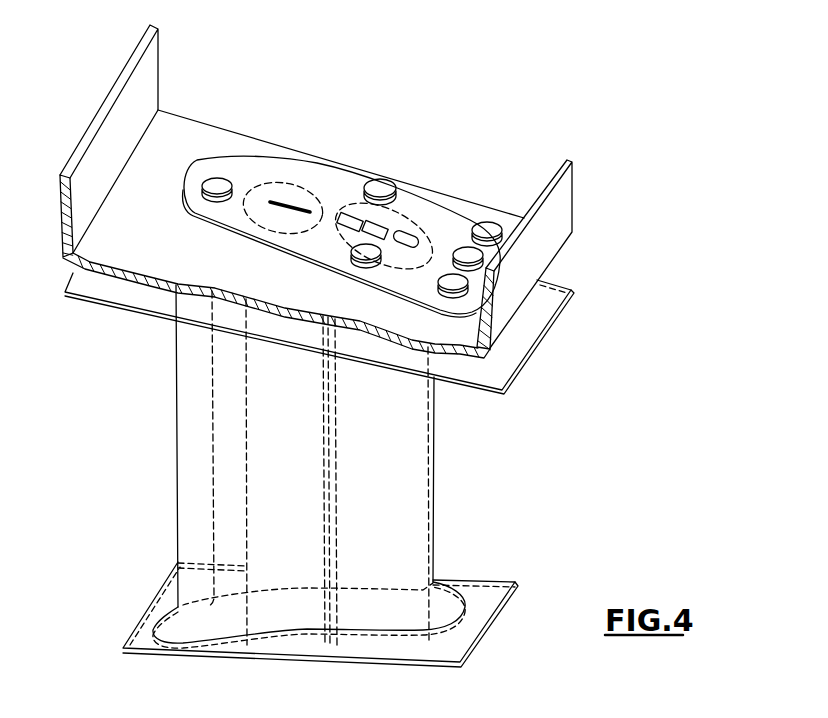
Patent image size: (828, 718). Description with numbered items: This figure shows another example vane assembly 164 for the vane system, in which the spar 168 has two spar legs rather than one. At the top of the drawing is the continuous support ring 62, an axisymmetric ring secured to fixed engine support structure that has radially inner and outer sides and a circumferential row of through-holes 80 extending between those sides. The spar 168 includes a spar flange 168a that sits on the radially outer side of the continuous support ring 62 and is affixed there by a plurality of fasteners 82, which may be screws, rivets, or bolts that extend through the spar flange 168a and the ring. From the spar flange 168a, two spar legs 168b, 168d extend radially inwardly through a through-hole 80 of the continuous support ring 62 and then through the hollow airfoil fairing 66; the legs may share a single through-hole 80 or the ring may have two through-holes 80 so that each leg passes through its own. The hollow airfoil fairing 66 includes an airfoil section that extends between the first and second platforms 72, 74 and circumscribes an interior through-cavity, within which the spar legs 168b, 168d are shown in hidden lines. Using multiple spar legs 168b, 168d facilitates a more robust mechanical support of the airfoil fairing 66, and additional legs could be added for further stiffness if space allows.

The continuous support ring 62 is at (184, 119).
The hollow airfoil fairing 66 is at (192, 453).
The first platform 72 is at (500, 368).
The second platform 74 is at (472, 633).
The through-hole 80 is at (336, 232).
The fasteners 82 is at (481, 225).
The vane assembly 164 is at (592, 473).
The spar 168 is at (318, 160).
The spar flange 168a is at (417, 207).
The spar leg 168b is at (245, 500).
The spar leg 168d is at (434, 523).